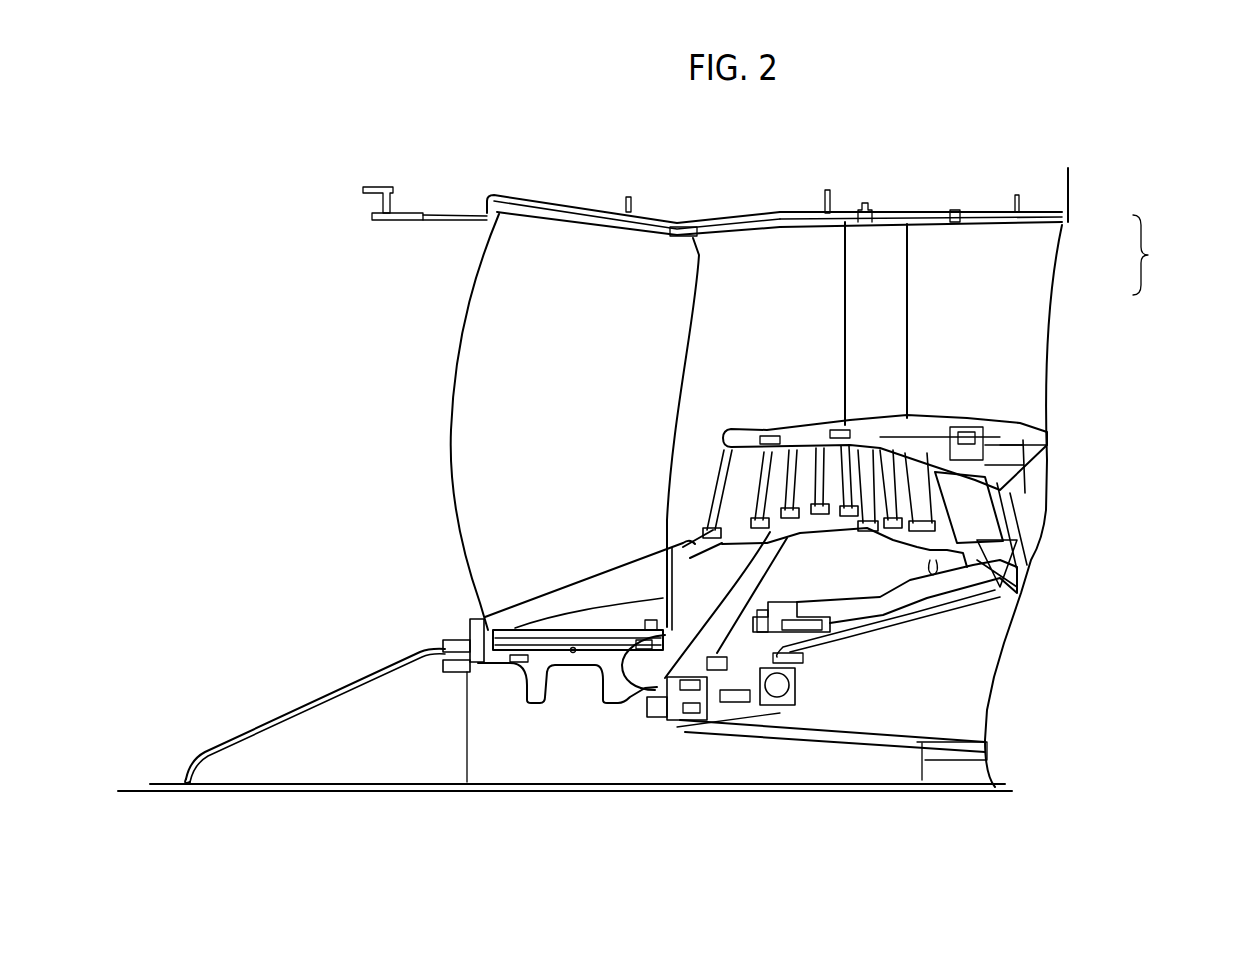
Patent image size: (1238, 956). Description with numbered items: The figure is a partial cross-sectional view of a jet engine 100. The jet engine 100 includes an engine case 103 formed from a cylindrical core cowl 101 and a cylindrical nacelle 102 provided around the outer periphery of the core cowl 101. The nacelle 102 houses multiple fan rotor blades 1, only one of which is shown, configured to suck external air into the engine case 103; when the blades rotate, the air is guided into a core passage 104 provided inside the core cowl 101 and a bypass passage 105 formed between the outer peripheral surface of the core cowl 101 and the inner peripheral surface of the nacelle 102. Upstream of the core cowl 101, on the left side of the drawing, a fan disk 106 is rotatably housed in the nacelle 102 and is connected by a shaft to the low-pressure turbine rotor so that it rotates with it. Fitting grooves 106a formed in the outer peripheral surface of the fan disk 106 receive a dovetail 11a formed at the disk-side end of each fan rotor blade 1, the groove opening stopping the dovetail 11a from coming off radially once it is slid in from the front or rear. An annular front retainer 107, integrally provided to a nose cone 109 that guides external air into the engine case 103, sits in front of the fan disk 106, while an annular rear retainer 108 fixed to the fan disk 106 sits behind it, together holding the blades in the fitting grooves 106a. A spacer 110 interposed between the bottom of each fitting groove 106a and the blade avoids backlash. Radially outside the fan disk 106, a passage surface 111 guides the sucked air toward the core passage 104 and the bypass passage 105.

The fan rotor blade 1 is at (580, 437).
The jet engine 100 is at (980, 167).
The core cowl 101 is at (971, 418).
The nacelle 102 is at (1045, 216).
The engine case 103 is at (1162, 255).
The core passage 104 is at (950, 490).
The bypass passage 105 is at (981, 320).
The fan disk 106 is at (555, 668).
The fitting groove 106a is at (573, 652).
The front retainer 107 is at (483, 668).
The rear retainer 108 is at (665, 637).
The nose cone 109 is at (243, 747).
The spacer 110 is at (523, 665).
The passage surface 111 is at (520, 607).
The dovetail 11a is at (545, 647).